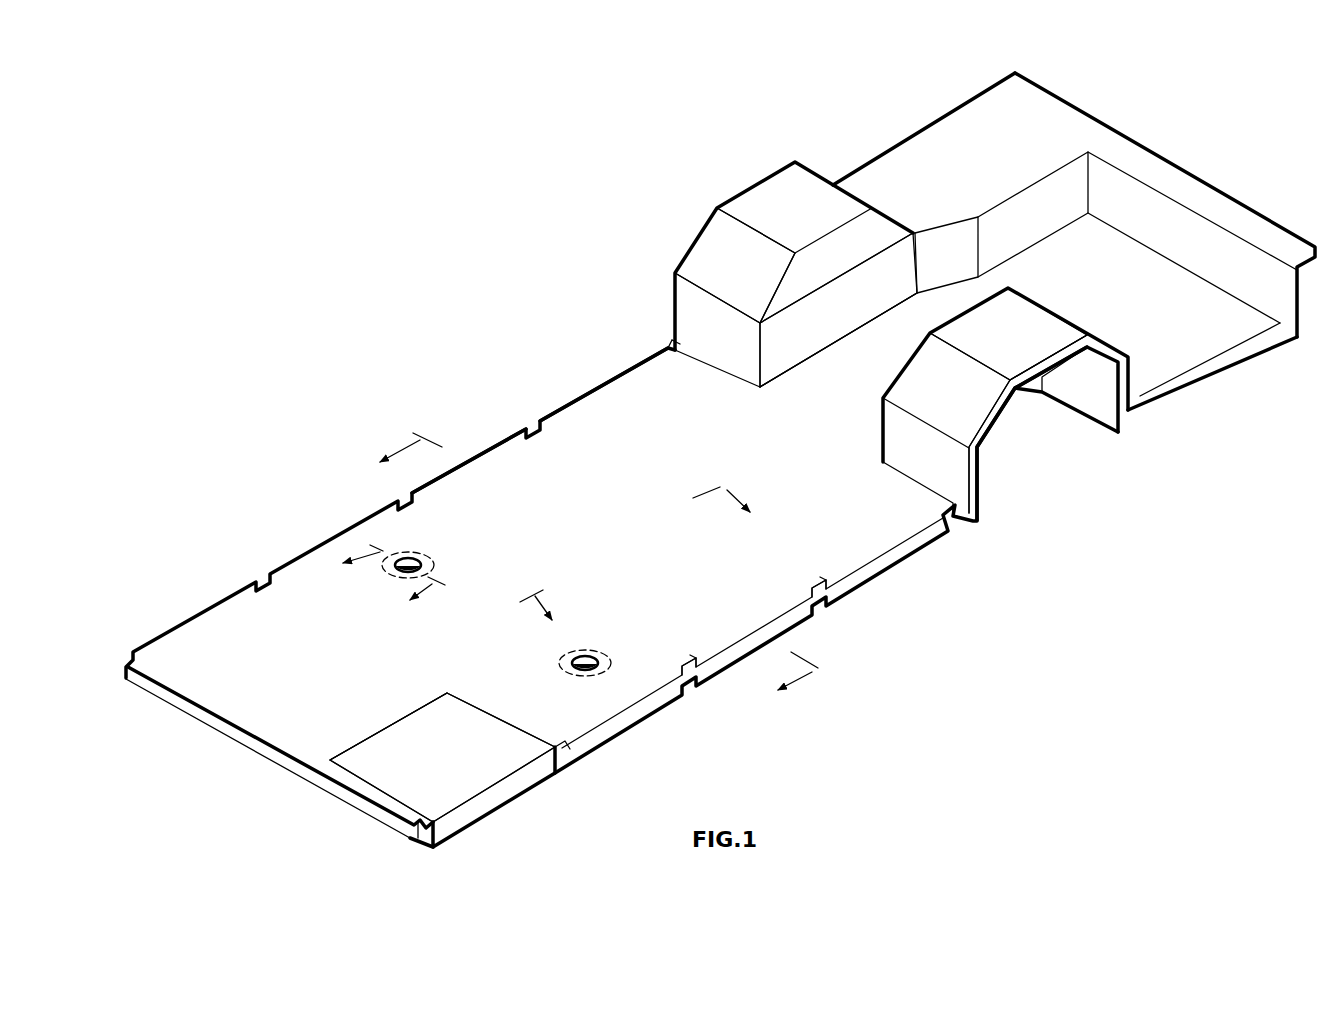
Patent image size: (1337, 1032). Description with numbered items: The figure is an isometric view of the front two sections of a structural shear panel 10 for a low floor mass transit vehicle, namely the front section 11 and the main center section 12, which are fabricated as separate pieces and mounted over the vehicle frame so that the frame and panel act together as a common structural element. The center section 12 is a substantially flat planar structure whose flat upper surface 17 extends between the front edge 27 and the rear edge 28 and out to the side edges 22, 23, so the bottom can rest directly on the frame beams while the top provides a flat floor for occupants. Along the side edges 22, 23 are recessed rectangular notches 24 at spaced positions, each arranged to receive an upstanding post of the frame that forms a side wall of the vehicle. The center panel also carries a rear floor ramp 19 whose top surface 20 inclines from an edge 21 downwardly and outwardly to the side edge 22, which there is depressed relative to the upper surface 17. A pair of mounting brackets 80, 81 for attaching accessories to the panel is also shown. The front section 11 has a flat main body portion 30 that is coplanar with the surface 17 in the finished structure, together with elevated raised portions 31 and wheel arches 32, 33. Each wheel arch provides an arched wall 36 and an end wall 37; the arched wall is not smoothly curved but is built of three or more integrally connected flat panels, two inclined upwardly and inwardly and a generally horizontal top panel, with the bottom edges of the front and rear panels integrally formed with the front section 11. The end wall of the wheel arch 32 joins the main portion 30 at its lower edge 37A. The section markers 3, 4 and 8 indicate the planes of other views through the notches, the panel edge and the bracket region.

The structural shear panel 10 is at (425, 370).
The front section 11 is at (1074, 264).
The main center section 12 is at (535, 385).
The upper surface 17 is at (600, 375).
The rear floor ramp 19 is at (438, 769).
The top surface 20 is at (438, 723).
The edge 21 is at (388, 728).
The side edge 22 is at (548, 782).
The side edge 23 is at (205, 605).
The notch 24 is at (665, 345).
The front edge 27 is at (1178, 162).
The rear edge 28 is at (220, 722).
The main body portion 30 is at (1196, 350).
The raised portion 31 is at (930, 150).
The wheel arch 32 is at (1063, 318).
The wheel arch 33 is at (700, 243).
The arched wall 36 is at (765, 200).
The end wall 37 is at (847, 312).
The lower edge 37A is at (800, 366).
The mounting bracket 80 is at (422, 558).
The mounting bracket 81 is at (592, 652).
The section line 3- 3 is at (606, 554).
The section line 4- 4 is at (624, 544).
The section line 8- 8 is at (402, 566).